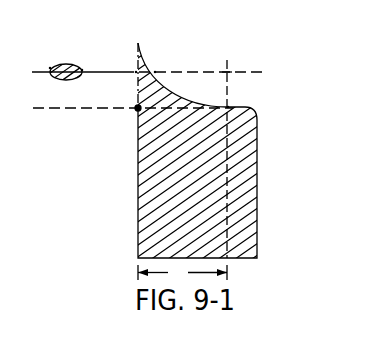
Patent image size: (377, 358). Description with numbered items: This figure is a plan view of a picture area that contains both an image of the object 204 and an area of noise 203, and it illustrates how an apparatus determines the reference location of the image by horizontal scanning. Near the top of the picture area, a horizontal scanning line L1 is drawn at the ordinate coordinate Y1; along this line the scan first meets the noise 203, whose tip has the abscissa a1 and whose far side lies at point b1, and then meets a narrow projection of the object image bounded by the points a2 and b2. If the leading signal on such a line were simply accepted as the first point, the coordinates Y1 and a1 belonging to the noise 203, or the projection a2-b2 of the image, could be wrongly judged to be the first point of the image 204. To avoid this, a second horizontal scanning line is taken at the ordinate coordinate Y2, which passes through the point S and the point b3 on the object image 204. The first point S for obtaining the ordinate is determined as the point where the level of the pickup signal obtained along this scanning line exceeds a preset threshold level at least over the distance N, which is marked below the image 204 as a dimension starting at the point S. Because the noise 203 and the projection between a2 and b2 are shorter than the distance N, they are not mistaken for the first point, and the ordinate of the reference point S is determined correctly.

The noise 203 is at (67, 63).
The image of the object 204 is at (258, 187).
The ordinate coordinate Y1 is at (134, 74).
The ordinate coordinate Y2 is at (120, 109).
The horizontal line L1 is at (242, 72).
The reference point S is at (132, 118).
The distance N is at (182, 273).
The abscissa a1 is at (50, 68).
The point b1 is at (82, 70).
The point a2 is at (135, 72).
The point b2 is at (155, 72).
The point b3 is at (228, 107).